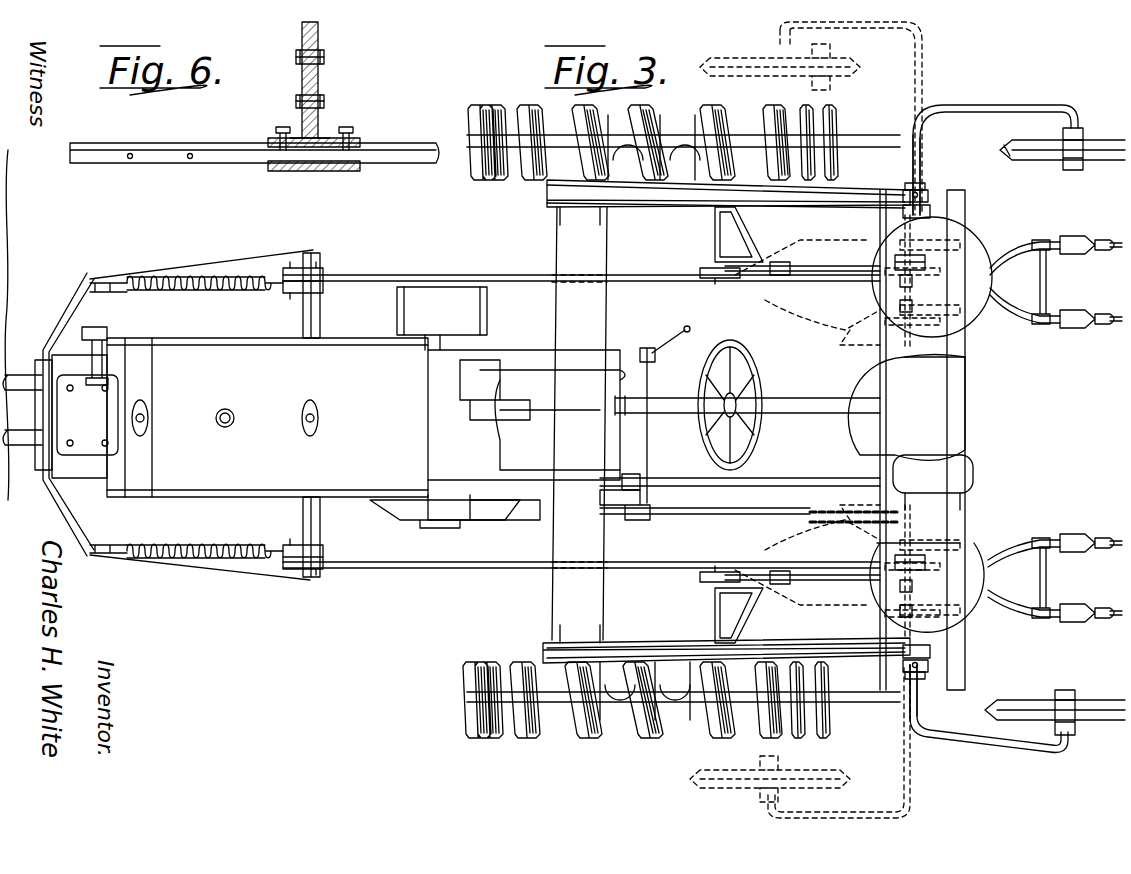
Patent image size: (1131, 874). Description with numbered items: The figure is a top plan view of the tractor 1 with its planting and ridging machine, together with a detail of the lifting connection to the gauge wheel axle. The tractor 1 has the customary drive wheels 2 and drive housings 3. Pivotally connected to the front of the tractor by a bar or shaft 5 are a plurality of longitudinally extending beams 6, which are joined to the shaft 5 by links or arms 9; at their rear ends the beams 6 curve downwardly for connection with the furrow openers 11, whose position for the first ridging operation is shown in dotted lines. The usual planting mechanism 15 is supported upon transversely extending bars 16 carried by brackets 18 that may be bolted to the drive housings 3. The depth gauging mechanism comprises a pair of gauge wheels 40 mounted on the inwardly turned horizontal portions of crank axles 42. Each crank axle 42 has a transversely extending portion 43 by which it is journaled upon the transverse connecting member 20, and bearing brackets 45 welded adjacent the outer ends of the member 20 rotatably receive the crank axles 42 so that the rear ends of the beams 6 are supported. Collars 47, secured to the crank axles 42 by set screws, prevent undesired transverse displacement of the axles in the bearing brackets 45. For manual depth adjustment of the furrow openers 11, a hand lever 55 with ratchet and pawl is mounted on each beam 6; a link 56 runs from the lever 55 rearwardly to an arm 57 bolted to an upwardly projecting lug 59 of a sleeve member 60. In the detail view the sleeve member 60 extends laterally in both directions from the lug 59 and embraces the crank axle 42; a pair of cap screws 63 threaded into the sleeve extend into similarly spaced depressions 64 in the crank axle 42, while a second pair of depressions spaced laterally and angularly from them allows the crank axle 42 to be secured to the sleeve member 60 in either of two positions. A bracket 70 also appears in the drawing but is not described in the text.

In FIG. 3, the tractor 1 is at (508, 360).
In FIG. 3, the drive wheels 2 is at (560, 135).
In FIG. 3, the drive housings 3 is at (547, 195).
In FIG. 3, the bar or shaft 5 is at (322, 300).
In FIG. 3, the beams 6 is at (438, 276).
In FIG. 3, the links or arms 9 is at (325, 283).
In FIG. 3, the furrow openers 11 is at (860, 335).
In FIG. 3, the planting mechanism 15 is at (990, 255).
In FIG. 3, the transversely extending bars 16 is at (965, 365).
In FIG. 3, the brackets 18 is at (838, 195).
In FIG. 3, the transverse connecting member 20 is at (895, 368).
In FIG. 3, the gauge wheels 40 is at (1040, 148).
In FIG. 3, the crank axles 42 is at (995, 112).
In FIG. 6, the transversely extending portions 43 is at (380, 155).
In FIG. 3, the transversely extending portions 43 is at (922, 155).
In FIG. 3, the bearing brackets 45 is at (930, 190).
In FIG. 3, the collars 47 is at (905, 185).
In FIG. 3, the hand lever 55 is at (738, 278).
In FIG. 3, the link 56 is at (780, 264).
In FIG. 6, the arms 57 is at (318, 30).
In FIG. 3, the arms 57 is at (888, 280).
In FIG. 6, the lug 59 is at (320, 78).
In FIG. 3, the lug 59 is at (895, 262).
In FIG. 6, the sleeve member 60 is at (290, 165).
In FIG. 3, the sleeve member 60 is at (873, 625).
In FIG. 6, the cap screws 63 is at (278, 130).
In FIG. 3, the cap screws 63 is at (924, 435).
In FIG. 6, the depressions 64 is at (188, 160).
In FIG. 3, the bracket 70 is at (714, 240).